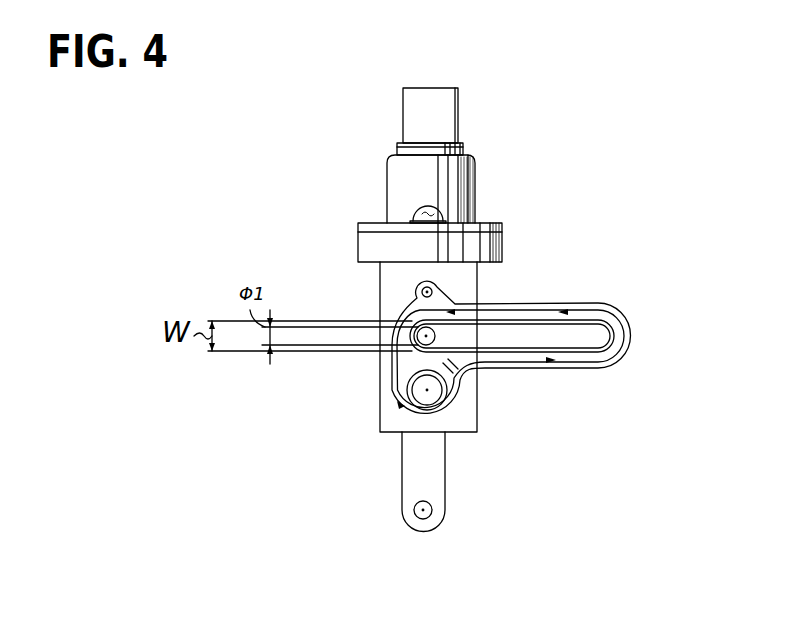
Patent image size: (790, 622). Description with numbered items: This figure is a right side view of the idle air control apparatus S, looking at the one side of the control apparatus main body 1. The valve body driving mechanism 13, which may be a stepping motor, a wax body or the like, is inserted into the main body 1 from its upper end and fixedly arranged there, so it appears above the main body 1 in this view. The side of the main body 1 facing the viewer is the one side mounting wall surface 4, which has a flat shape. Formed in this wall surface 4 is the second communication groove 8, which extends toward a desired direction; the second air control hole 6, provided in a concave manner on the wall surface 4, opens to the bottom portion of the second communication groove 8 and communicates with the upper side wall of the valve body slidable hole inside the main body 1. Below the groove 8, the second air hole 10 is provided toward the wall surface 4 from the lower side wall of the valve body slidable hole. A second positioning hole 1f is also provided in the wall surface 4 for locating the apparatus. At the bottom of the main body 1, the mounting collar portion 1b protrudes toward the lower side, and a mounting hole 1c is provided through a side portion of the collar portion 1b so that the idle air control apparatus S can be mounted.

The idle air control apparatus S is at (410, 29).
The valve body driving mechanism 13 is at (473, 162).
The control apparatus main body 1 is at (378, 428).
The mounting collar portion 1b is at (445, 478).
The mounting hole 1c is at (425, 522).
The one side mounting wall surface 4 is at (413, 297).
The second positioning hole 1f is at (432, 283).
The second communication groove 8 is at (578, 338).
The second air control hole 6 is at (447, 340).
The second air hole 10 is at (407, 391).